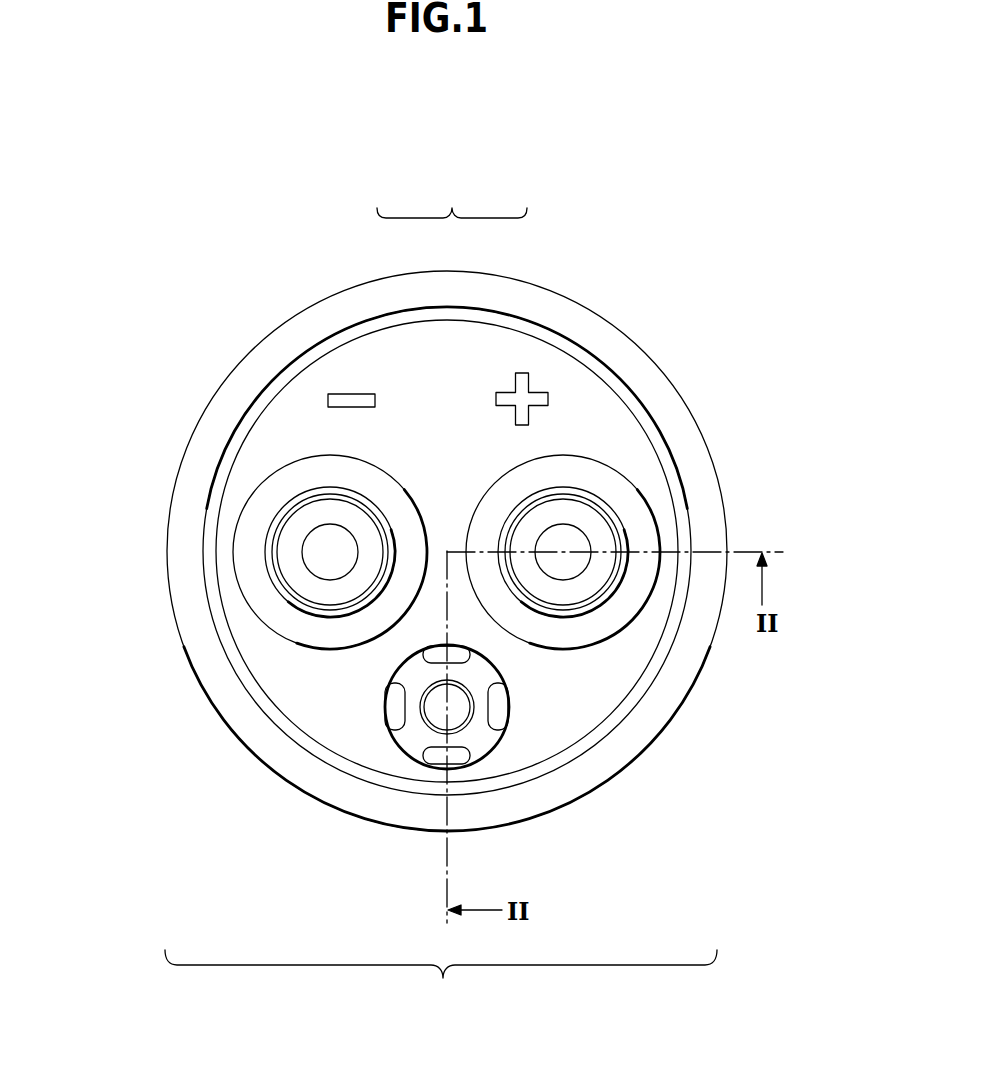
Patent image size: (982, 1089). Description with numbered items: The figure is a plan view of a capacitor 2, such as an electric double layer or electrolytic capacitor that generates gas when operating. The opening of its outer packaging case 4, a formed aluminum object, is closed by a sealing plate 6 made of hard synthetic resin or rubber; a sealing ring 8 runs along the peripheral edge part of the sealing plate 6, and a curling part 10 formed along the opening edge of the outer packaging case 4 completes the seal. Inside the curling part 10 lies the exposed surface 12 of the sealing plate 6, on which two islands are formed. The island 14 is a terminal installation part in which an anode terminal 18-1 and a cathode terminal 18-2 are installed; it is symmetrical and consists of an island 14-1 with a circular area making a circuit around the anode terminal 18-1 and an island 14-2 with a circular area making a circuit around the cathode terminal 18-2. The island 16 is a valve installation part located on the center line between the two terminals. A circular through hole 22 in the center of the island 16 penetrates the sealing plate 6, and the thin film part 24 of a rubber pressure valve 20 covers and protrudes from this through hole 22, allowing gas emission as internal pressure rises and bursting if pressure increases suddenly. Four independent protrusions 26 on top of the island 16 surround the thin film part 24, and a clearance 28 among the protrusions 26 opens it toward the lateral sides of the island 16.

The capacitor 2 is at (441, 980).
The outer packaging case 4 is at (250, 760).
The sealing plate 6 is at (438, 399).
The sealing ring 8 is at (238, 662).
The curling part 10 is at (165, 527).
The exposed surface 12 is at (345, 367).
The island 14 is at (452, 196).
The island 14-1 is at (505, 482).
The island 14-2 is at (363, 472).
The island 16 is at (502, 735).
The anode terminal 18-1 is at (595, 498).
The cathode terminal 18-2 is at (300, 495).
The pressure valve 20 is at (410, 752).
The through hole 22 is at (463, 695).
The thin film part 24 is at (425, 737).
The protrusions 26 is at (437, 762).
The clearance 28 is at (477, 743).